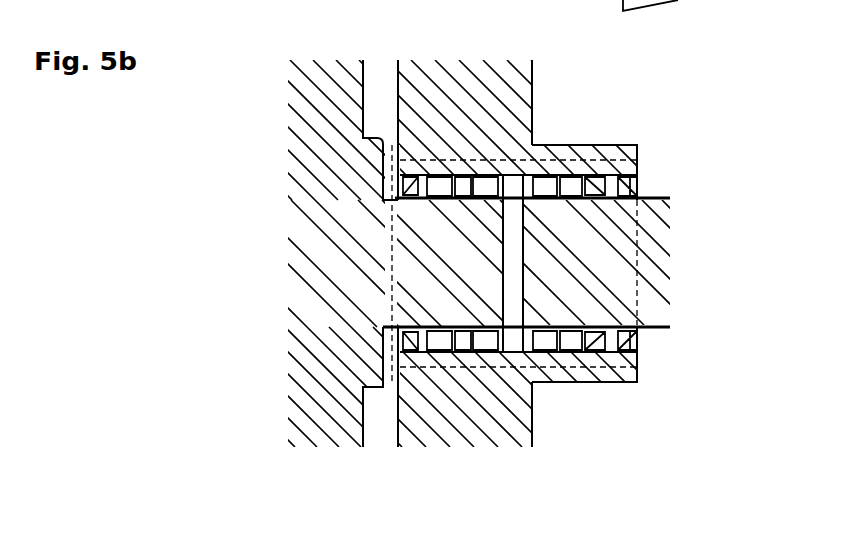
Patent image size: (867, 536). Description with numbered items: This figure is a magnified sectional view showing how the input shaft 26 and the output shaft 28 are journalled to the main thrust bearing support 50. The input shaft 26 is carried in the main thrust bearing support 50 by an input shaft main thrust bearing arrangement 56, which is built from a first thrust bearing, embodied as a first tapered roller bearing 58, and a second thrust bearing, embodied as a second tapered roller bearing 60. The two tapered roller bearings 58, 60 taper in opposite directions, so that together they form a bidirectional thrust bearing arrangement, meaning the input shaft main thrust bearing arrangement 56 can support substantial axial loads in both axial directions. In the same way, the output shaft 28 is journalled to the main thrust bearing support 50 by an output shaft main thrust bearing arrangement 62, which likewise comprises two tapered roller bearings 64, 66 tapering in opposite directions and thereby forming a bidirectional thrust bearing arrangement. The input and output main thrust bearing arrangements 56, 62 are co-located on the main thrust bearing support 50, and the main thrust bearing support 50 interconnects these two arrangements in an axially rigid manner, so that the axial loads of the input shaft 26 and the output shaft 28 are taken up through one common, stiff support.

The input shaft 26 is at (300, 352).
The output shaft 28 is at (665, 243).
The main thrust bearing support 50 is at (504, 255).
The input shaft main thrust bearing arrangement 56 is at (465, 165).
The first tapered roller bearing 58 is at (450, 352).
The second tapered roller bearing 60 is at (487, 352).
The output shaft main thrust bearing arrangement 62 is at (592, 150).
The tapered roller bearing 64 is at (545, 358).
The tapered roller bearing 66 is at (595, 370).